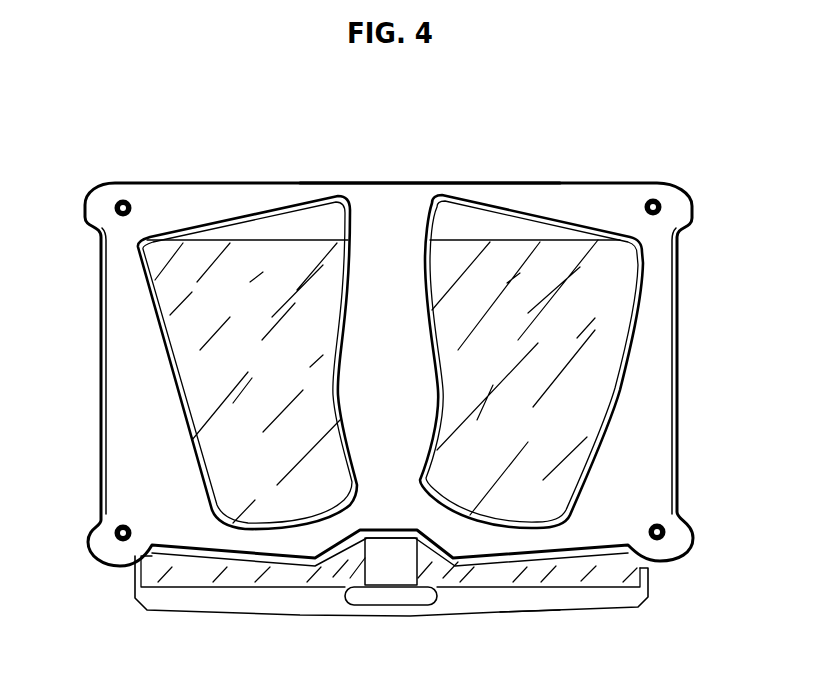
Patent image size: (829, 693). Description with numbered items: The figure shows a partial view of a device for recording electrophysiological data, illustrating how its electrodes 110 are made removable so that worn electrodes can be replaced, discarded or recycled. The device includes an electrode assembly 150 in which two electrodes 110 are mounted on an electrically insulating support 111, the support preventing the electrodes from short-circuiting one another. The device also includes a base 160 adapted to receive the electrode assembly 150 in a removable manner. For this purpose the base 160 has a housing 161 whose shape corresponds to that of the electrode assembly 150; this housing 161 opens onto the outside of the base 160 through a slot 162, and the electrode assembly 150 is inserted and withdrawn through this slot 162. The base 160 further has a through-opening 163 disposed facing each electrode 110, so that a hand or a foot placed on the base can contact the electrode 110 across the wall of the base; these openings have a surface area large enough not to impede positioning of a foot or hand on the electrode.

The electrode 110 is at (230, 322).
The electrically insulating support 111 is at (560, 598).
The electrode assembly 150 is at (603, 595).
The base 160 is at (673, 533).
The housing 161 is at (568, 199).
The slot 162 is at (185, 555).
The through-opening 163 is at (228, 413).